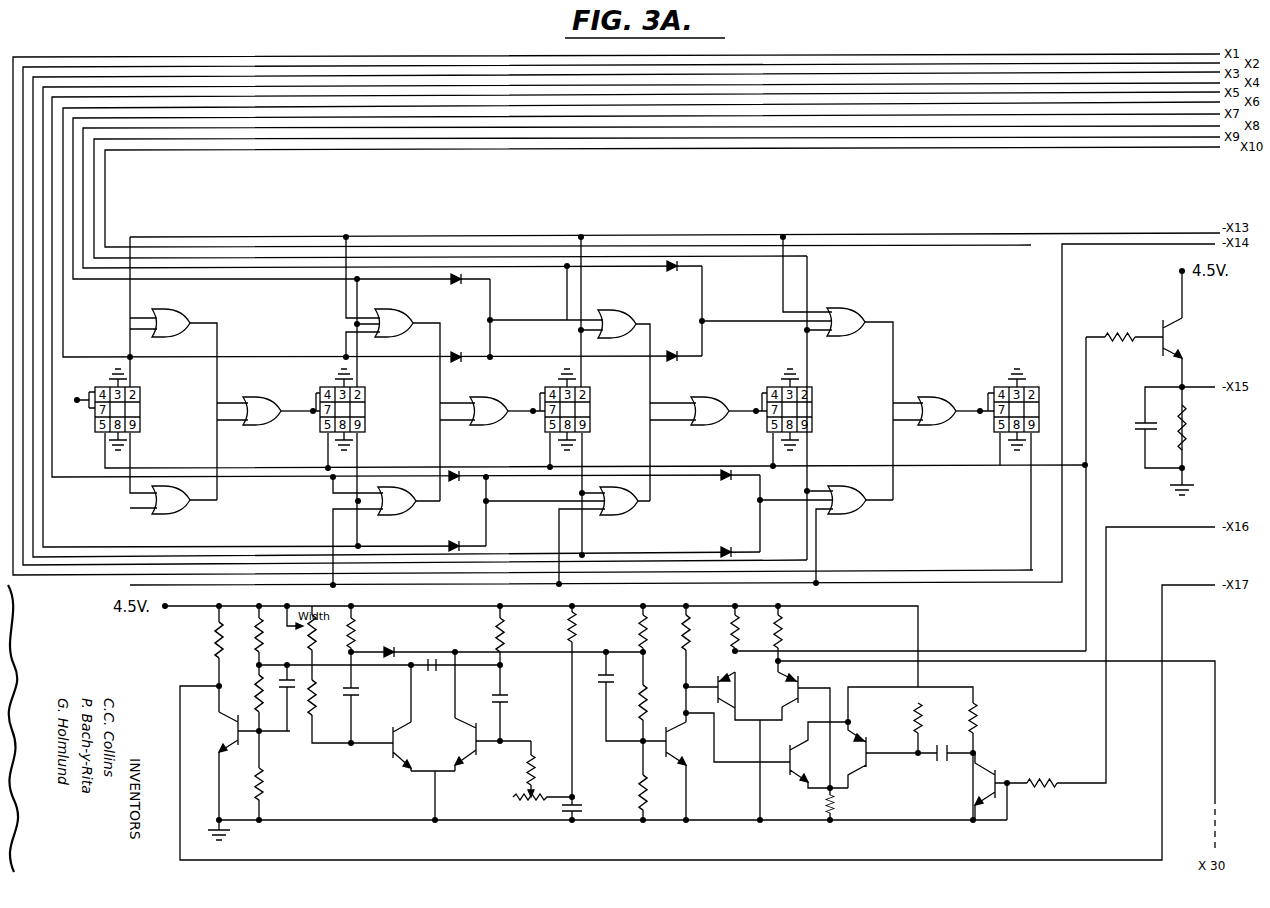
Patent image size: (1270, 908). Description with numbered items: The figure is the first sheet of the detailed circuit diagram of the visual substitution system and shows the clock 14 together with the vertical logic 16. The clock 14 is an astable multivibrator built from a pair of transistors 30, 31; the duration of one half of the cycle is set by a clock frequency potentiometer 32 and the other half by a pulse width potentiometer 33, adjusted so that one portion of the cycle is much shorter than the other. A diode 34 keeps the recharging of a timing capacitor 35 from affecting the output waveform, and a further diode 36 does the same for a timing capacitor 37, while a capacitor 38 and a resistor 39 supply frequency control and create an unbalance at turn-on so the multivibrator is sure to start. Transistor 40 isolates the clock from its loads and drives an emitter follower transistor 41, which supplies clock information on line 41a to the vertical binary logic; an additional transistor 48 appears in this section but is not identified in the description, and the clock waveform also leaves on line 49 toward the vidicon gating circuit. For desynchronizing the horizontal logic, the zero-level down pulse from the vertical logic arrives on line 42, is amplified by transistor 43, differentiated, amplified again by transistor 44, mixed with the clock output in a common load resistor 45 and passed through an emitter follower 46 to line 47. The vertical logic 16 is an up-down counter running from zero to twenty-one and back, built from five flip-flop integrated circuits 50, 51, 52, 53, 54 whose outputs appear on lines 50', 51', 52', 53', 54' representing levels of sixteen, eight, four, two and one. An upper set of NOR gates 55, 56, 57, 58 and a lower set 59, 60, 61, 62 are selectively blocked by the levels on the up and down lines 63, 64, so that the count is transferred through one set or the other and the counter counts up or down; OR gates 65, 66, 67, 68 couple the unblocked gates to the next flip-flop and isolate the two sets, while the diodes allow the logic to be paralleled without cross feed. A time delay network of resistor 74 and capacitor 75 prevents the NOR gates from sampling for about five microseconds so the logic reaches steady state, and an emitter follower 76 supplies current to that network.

The clock 14 is at (207, 668).
The vertical logic 16 is at (475, 201).
The transistor 30 is at (392, 750).
The transistor 31 is at (493, 752).
The clock frequency potentiometer 32 is at (538, 783).
The pulse width potentiometer 33 is at (308, 631).
The diode 34 is at (390, 651).
The timing capacitor 35 is at (354, 697).
The diode 36 is at (437, 675).
The timing capacitor 37 is at (508, 700).
The capacitor 38 is at (580, 806).
The resistor 39 is at (587, 701).
The transistor 40 is at (684, 743).
The transistor 41 is at (731, 688).
The line 41a is at (930, 651).
The line 42 is at (1172, 526).
The transistor 43 is at (996, 775).
The transistor 44 is at (868, 754).
The common load resistor 45 is at (835, 800).
The emitter follower 46 is at (802, 687).
The line 47 is at (1213, 798).
The transistor 48 is at (232, 731).
The line 49 is at (180, 773).
The flip-flop integrated circuit logic element 50 is at (137, 409).
The flip-flop integrated circuit logic element 51 is at (361, 409).
The flip-flop integrated circuit logic element 52 is at (586, 409).
The flip-flop integrated circuit logic element 53 is at (805, 409).
The flip-flop integrated circuit logic element 54 is at (998, 403).
The flip-flop output line 50' is at (641, 243).
The flip-flop output line 51' is at (646, 211).
The flip-flop output line 52' is at (651, 211).
The flip-flop output line 53' is at (657, 208).
The flip-flop output line 54' is at (662, 213).
The NOR gate 55 is at (161, 320).
The NOR gate 56 is at (391, 322).
The NOR gate 57 is at (608, 320).
The NOR gate 58 is at (845, 318).
The NOR gate 59 is at (172, 505).
The NOR gate 60 is at (398, 505).
The NOR gate 61 is at (632, 505).
The NOR gate 62 is at (853, 505).
The up line 63 is at (1008, 586).
The down line 64 is at (1003, 238).
The OR gate 65 is at (268, 404).
The OR gate 66 is at (508, 392).
The OR gate 67 is at (712, 398).
The OR gate 68 is at (942, 398).
The resistor 74 is at (1190, 442).
The capacitor 75 is at (1140, 428).
The emitter follower 76 is at (1176, 338).